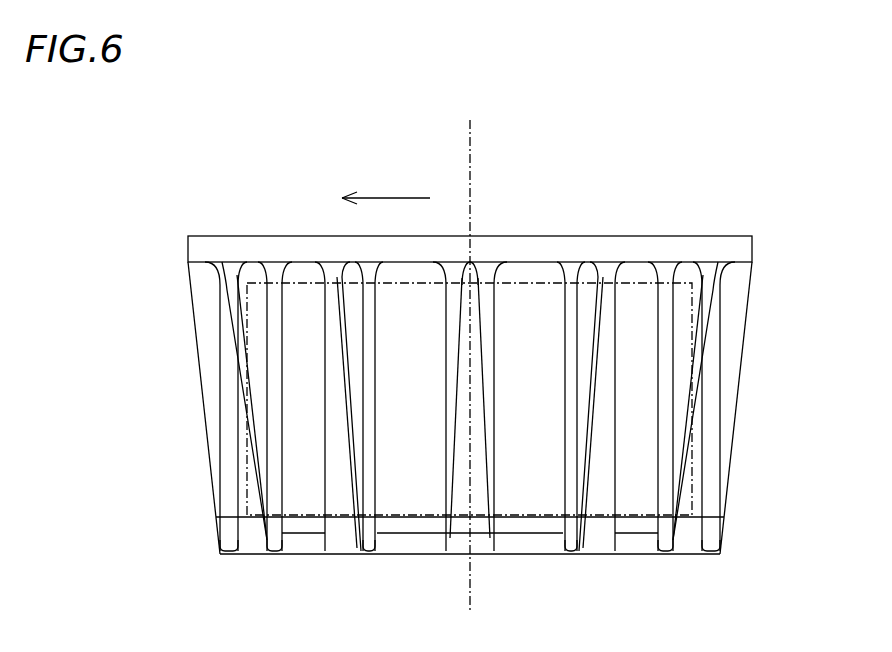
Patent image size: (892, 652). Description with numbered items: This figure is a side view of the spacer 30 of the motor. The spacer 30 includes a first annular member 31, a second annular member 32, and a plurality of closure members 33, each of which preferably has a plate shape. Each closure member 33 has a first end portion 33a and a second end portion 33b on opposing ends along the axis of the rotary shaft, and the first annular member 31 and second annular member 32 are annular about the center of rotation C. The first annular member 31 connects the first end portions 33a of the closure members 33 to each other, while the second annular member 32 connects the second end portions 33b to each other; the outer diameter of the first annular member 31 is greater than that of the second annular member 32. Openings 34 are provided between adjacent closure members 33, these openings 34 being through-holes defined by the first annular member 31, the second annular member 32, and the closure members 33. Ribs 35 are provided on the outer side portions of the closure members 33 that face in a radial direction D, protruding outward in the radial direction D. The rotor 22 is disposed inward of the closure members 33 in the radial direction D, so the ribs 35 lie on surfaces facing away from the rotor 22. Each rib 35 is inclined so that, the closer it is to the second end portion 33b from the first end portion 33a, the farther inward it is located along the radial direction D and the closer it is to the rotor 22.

The spacer 30 is at (296, 170).
The first annular member 31 is at (190, 248).
The second annular member 32 is at (220, 538).
The closure member 33 is at (198, 355).
The first end portion 33a is at (190, 307).
The second end portion 33b is at (213, 503).
The opening 34 is at (412, 325).
The rib 35 is at (208, 412).
The rotor 22 is at (580, 283).
The center of rotation C is at (470, 142).
The radial direction D is at (386, 184).